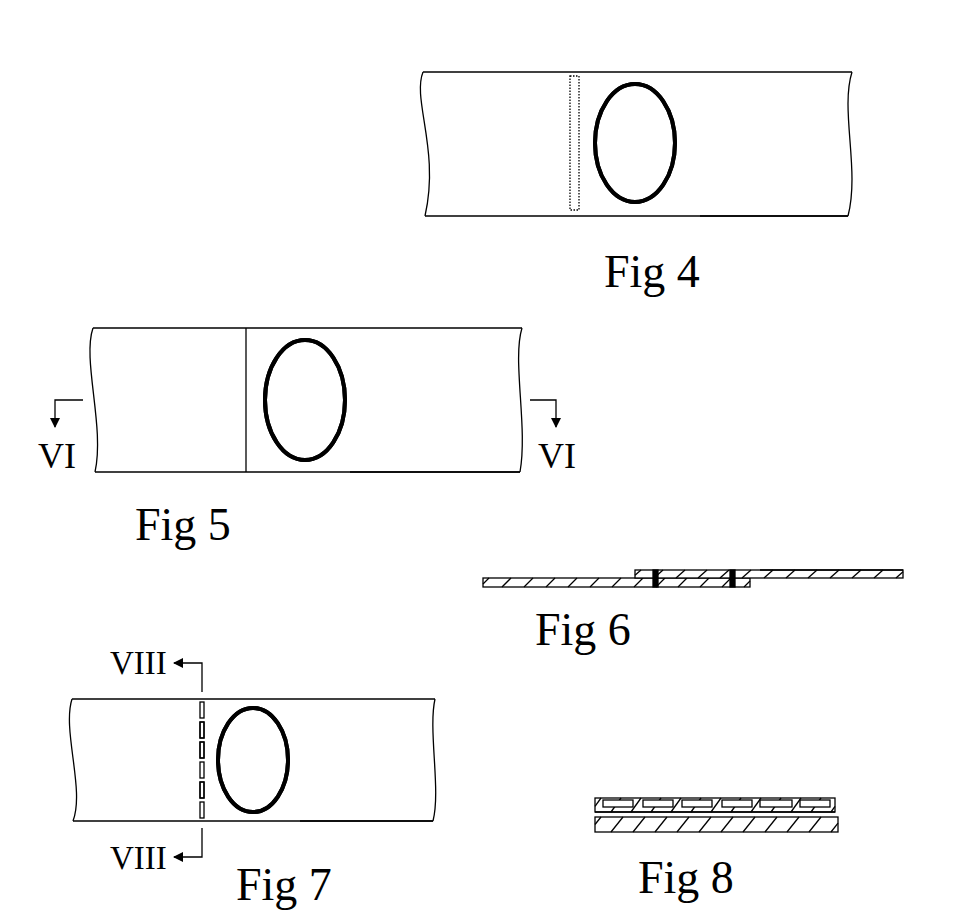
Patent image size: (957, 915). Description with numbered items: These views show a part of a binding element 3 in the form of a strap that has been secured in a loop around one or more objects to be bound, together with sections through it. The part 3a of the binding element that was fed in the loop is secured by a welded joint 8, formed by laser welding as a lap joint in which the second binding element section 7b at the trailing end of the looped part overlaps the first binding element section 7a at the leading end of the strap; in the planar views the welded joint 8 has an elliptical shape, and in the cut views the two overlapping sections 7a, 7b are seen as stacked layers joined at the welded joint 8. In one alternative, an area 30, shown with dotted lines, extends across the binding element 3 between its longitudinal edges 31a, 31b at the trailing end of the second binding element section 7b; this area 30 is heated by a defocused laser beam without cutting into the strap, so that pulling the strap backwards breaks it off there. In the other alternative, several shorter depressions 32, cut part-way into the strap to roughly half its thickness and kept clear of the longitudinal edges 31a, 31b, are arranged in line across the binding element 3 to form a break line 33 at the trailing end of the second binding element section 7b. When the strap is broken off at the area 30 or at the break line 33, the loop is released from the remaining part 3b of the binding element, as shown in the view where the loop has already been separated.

In FIG. 4, the binding element 3 is at (453, 60).
In FIG. 7, the binding element 3 is at (352, 691).
In FIG. 4, the part of the binding element 3a is at (780, 207).
In FIG. 5, the part of the binding element 3a is at (397, 460).
In FIG. 6, the part of the binding element 3a is at (786, 576).
In FIG. 7, the part of the binding element 3a is at (372, 812).
In FIG. 4, the remaining part of the binding element 3b is at (438, 210).
In FIG. 7, the remaining part of the binding element 3b is at (80, 815).
In FIG. 4, the longitudinal edge 31a is at (494, 72).
In FIG. 7, the longitudinal edge 31a is at (101, 698).
In FIG. 8, the longitudinal edge 31a is at (840, 804).
In FIG. 4, the longitudinal edge 31b is at (488, 218).
In FIG. 7, the longitudinal edge 31b is at (100, 823).
In FIG. 8, the longitudinal edge 31b is at (593, 807).
In FIG. 4, the area 30 is at (577, 88).
In FIG. 7, the area 30 is at (207, 708).
In FIG. 7, the depression 32 is at (198, 733).
In FIG. 8, the depression 32 is at (662, 798).
In FIG. 7, the break line 33 is at (197, 795).
In FIG. 6, the first binding element section 7a is at (698, 584).
In FIG. 8, the first binding element section 7a is at (766, 828).
In FIG. 4, the second binding element section 7b is at (623, 84).
In FIG. 5, the second binding element section 7b is at (283, 338).
In FIG. 6, the second binding element section 7b is at (690, 572).
In FIG. 7, the second binding element section 7b is at (239, 706).
In FIG. 4, the welded joint 8 is at (678, 126).
In FIG. 5, the welded joint 8 is at (347, 378).
In FIG. 6, the welded joint 8 is at (657, 571).
In FIG. 7, the welded joint 8 is at (289, 746).